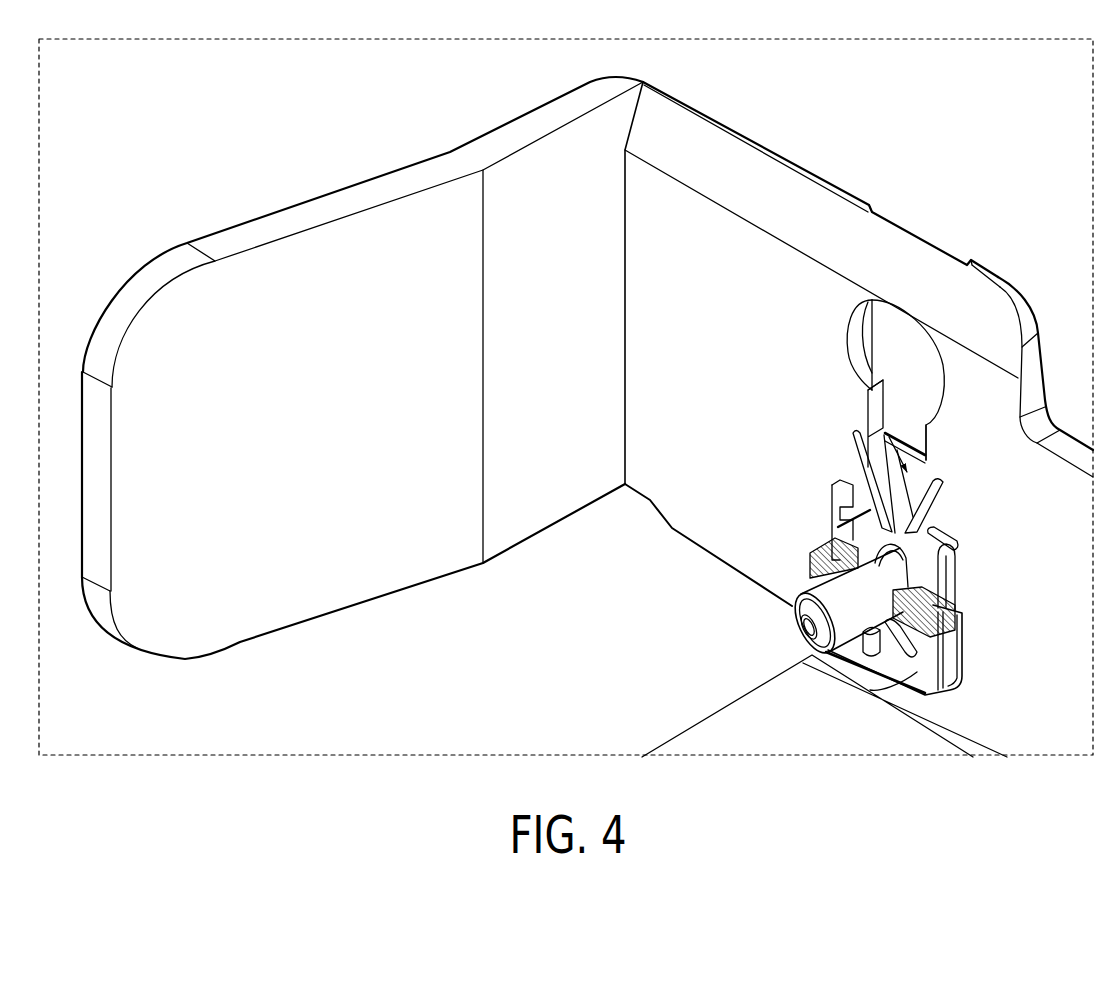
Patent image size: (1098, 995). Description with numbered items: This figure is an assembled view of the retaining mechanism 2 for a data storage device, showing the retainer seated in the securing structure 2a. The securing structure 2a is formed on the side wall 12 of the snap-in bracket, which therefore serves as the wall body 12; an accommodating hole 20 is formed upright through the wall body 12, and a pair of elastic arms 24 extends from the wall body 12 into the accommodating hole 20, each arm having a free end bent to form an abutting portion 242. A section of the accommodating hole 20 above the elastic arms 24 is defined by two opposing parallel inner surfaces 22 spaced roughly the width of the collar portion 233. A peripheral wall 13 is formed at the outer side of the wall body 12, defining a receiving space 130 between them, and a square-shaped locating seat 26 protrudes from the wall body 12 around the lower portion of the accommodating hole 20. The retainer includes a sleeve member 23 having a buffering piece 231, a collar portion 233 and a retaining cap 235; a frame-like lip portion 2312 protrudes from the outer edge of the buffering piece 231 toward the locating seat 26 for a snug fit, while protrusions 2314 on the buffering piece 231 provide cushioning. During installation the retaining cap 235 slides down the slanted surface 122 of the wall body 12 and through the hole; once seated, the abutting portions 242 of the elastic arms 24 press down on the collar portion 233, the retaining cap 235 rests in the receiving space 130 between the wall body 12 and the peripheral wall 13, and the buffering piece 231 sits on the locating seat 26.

The side wall 12 is at (693, 250).
The slanted surface 122 is at (813, 225).
The accommodating hole 20 is at (906, 344).
The receiving space 130 is at (868, 392).
The parallel inner surfaces 22 is at (878, 415).
The peripheral wall 13 is at (928, 457).
The elastic arms 24 is at (885, 470).
The retaining cap 235 is at (830, 490).
The collar portion 233 is at (830, 523).
The lip portion 2312 is at (813, 540).
The sleeve member 23 is at (723, 472).
The protrusions 2314 is at (797, 622).
The buffering piece 231 is at (810, 658).
The abutting portion 242 is at (946, 551).
The locating seat 26 is at (952, 578).
The securing structure 2a is at (961, 599).
The retaining mechanism 2 is at (1050, 637).